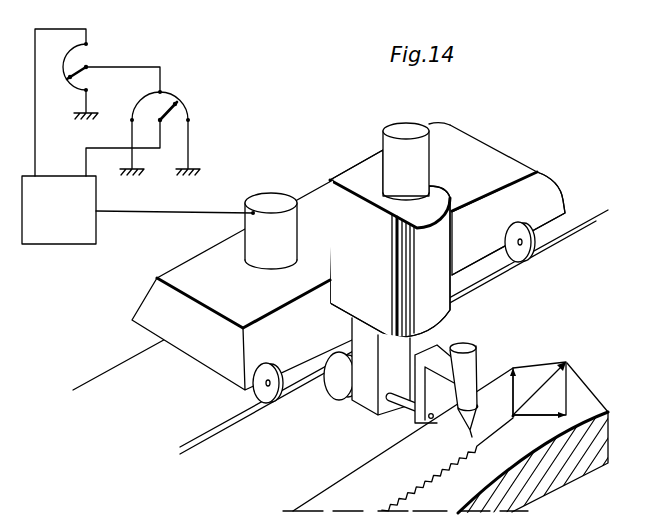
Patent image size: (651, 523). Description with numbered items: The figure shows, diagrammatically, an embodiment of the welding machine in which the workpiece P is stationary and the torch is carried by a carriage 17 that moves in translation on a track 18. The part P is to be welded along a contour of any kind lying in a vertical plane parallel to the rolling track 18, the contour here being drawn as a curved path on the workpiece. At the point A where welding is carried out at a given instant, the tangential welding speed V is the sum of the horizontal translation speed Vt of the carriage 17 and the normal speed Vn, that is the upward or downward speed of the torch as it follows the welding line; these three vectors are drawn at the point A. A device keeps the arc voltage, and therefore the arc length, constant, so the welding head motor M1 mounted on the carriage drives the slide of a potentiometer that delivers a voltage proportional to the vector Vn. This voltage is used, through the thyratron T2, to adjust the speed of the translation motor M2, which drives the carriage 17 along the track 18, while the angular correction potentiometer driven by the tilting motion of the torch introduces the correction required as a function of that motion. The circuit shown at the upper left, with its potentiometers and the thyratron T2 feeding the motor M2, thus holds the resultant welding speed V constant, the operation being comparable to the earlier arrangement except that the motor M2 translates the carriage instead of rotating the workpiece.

The carriage 17 is at (203, 353).
The track 18 is at (204, 440).
The welding head motor M1 is at (406, 161).
The translation motor M2 is at (271, 231).
The thyratron T2 is at (59, 210).
The speed setting potentiometer Vs is at (88, 55).
The workpiece P is at (344, 481).
The welding point A is at (513, 416).
The tangential speed V is at (539, 388).
The normal speed Vn is at (520, 379).
The horizontal translation speed Vt is at (539, 425).